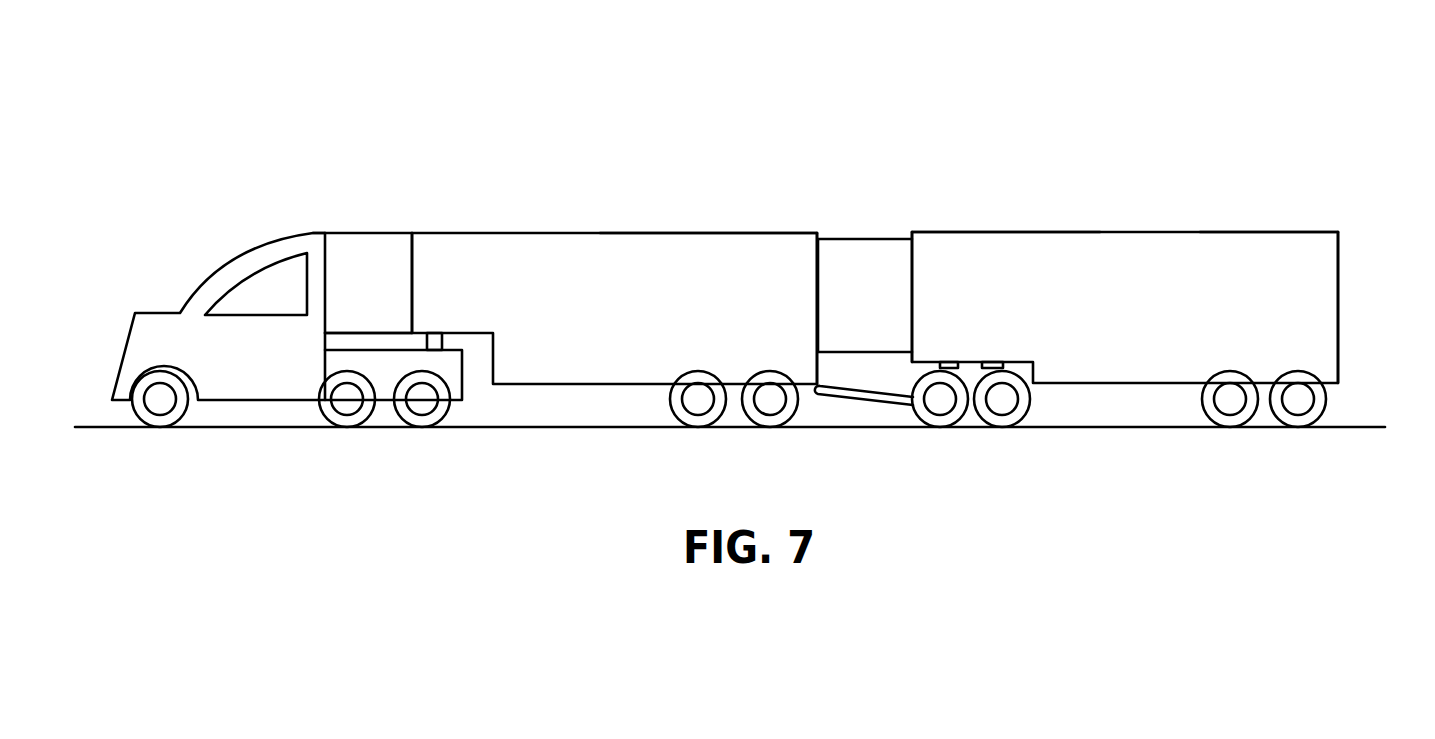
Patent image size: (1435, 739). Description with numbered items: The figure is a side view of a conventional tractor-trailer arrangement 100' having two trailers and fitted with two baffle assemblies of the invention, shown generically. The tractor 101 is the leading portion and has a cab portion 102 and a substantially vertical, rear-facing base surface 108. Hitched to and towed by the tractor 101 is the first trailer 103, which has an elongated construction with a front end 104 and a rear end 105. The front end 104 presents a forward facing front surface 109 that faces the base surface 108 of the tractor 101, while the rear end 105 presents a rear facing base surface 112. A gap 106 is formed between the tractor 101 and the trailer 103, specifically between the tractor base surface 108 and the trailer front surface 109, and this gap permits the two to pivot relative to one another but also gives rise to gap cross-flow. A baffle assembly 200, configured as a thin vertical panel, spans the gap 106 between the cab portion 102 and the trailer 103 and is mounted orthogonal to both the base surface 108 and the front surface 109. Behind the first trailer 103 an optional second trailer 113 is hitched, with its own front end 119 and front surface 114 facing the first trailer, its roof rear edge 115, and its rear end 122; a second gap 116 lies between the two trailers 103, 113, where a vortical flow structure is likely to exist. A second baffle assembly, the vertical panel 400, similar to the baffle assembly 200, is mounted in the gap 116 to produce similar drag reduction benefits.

The tractor-trailer arrangement 100' is at (730, 227).
The tractor 101 is at (125, 330).
The cab portion 102 is at (278, 367).
The trailer 103 is at (655, 298).
The front end 104 is at (430, 235).
The rear end 105 is at (784, 232).
The gap 106 is at (408, 340).
The base surface 108 is at (327, 240).
The front surface 109 is at (410, 242).
The base surface 112 is at (817, 258).
The second trailer 113 is at (1183, 300).
The front roof edge of second trailer 114 is at (965, 232).
The rear roof edge of second trailer 115 is at (1267, 232).
The second gap 116 is at (862, 372).
The front end of second trailer 119 is at (912, 250).
The rear end of second trailer 122 is at (1338, 268).
The baffle assembly 200 is at (393, 300).
The vertical panel 400 is at (890, 318).